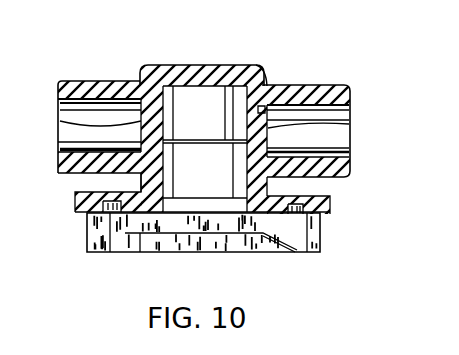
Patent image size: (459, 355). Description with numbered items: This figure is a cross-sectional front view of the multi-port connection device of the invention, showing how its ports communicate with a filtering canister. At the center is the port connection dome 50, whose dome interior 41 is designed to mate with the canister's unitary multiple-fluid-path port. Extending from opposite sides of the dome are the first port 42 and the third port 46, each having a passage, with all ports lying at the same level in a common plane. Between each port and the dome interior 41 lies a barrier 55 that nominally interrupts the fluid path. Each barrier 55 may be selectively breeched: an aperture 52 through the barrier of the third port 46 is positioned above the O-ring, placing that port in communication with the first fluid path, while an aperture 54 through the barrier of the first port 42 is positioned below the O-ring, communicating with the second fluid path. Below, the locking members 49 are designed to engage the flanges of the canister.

The dome interior 41 is at (205, 110).
The first port 42 is at (115, 81).
The third port 46 is at (323, 85).
The locking members 49 is at (238, 225).
The port connection dome 50 is at (190, 67).
The aperture 52 is at (252, 90).
The aperture 54 is at (58, 142).
The barrier 55 is at (62, 122).